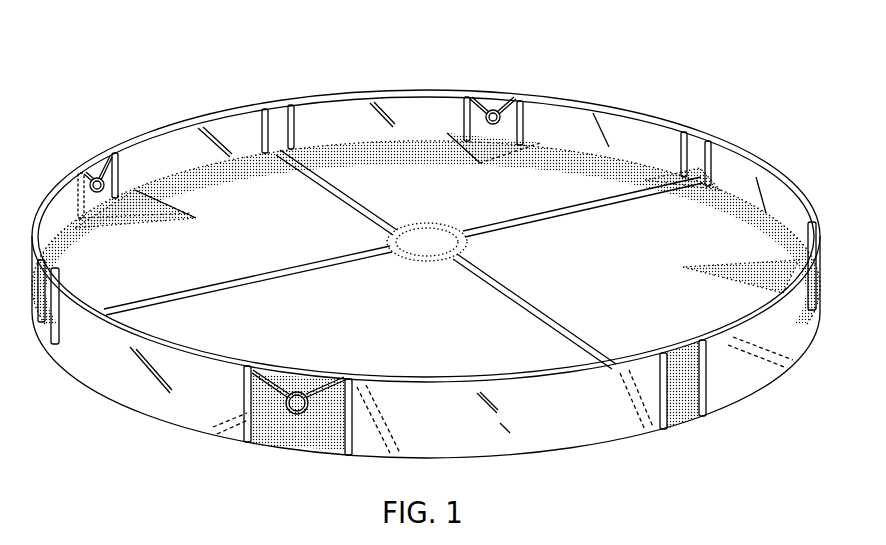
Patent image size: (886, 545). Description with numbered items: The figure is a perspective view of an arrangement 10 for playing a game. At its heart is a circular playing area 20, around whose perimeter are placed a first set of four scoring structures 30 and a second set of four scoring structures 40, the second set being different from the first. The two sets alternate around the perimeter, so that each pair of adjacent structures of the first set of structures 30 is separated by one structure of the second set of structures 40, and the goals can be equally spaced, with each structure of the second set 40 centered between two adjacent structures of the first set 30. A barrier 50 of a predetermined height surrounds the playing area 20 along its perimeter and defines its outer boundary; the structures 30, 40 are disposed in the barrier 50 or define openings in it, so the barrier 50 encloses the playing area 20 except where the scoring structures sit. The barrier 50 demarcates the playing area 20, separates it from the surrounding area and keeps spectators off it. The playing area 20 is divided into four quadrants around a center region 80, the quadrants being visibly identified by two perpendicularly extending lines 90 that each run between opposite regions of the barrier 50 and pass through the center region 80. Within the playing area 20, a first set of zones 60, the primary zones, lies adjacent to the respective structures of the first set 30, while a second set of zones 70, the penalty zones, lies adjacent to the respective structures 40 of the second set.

The arrangement for playing a game 10 is at (720, 53).
The circular playing area 20 is at (517, 195).
The first set of scoring structures 30 is at (493, 108).
The second set of scoring structures 40 is at (696, 150).
The barrier 50 is at (766, 185).
The first set of zones 60 is at (102, 185).
The second set of zones 70 is at (287, 143).
The center region 80 is at (422, 240).
The perpendicularly extending lines 90 is at (603, 202).